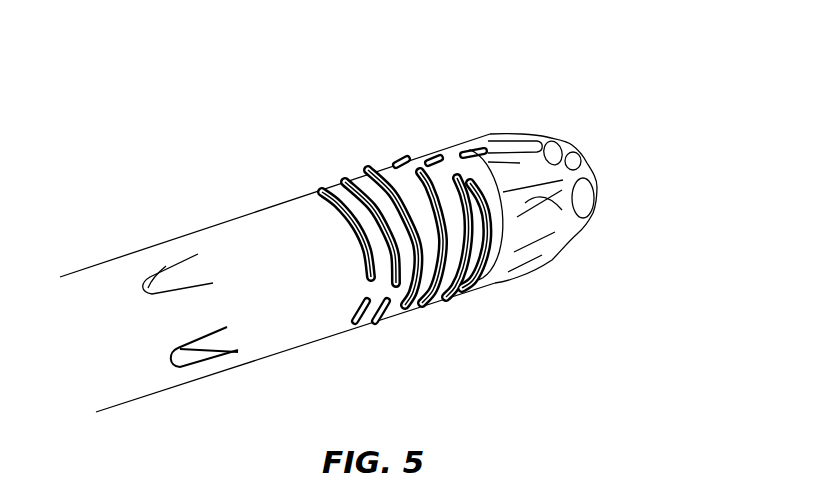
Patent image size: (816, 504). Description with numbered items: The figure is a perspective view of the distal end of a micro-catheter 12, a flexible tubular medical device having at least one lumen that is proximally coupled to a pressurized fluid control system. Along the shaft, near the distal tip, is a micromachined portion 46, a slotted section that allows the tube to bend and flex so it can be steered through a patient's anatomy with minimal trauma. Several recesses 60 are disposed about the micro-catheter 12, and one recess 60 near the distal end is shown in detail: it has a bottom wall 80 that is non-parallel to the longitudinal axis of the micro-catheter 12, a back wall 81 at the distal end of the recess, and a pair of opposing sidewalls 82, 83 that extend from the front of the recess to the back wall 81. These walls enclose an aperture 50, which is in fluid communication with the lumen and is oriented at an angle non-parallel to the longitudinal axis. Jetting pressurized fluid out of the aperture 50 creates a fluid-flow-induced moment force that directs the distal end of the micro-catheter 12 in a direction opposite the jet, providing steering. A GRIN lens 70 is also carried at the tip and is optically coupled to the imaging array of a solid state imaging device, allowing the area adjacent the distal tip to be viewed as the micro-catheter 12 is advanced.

The micro-catheter 12 is at (277, 340).
The micromachined portion 46 is at (454, 297).
The recess 60 is at (281, 149).
The aperture 50 is at (590, 173).
The GRIN lens 70 is at (576, 148).
The bottom wall 80 is at (527, 205).
The back wall 81 is at (583, 160).
The sidewall 82 is at (551, 142).
The sidewall 83 is at (590, 203).